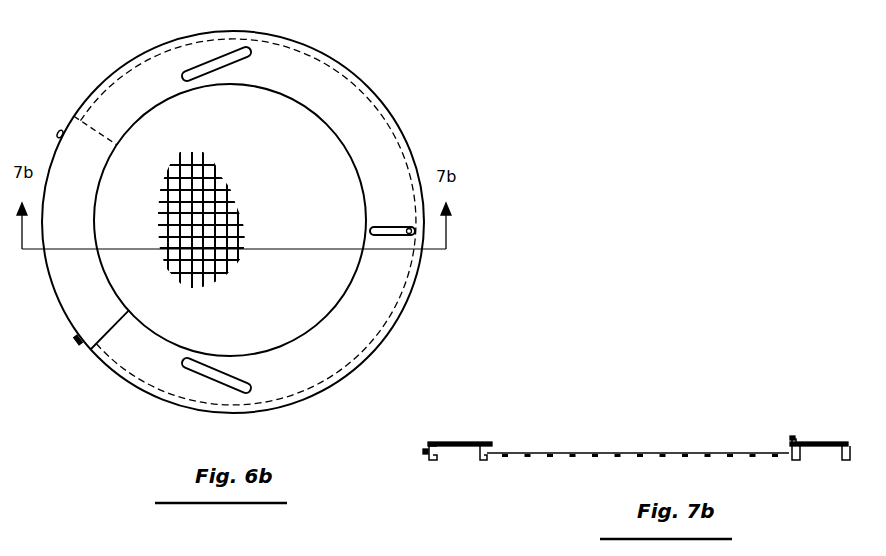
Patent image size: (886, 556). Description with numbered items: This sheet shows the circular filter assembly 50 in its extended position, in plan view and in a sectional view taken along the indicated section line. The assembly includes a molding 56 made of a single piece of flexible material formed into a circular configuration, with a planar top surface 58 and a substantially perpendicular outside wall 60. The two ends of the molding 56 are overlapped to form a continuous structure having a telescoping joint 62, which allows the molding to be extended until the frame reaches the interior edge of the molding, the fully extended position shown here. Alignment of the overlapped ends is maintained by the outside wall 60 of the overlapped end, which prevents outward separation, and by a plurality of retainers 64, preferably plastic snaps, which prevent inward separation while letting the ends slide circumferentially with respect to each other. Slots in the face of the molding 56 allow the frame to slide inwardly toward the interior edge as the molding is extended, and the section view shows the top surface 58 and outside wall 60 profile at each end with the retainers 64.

In FIG. 6B, the filter assembly 50 is at (206, 220).
In FIG. 6B, the molding 56 is at (367, 113).
In FIG. 7B, the planar top surface 58 is at (474, 441).
In FIG. 7B, the outside wall 60 is at (427, 442).
In FIG. 6B, the telescoping joint 62 is at (65, 287).
In FIG. 6B, the retainers 64 is at (59, 131).
In FIG. 7B, the retainers 64 is at (423, 452).